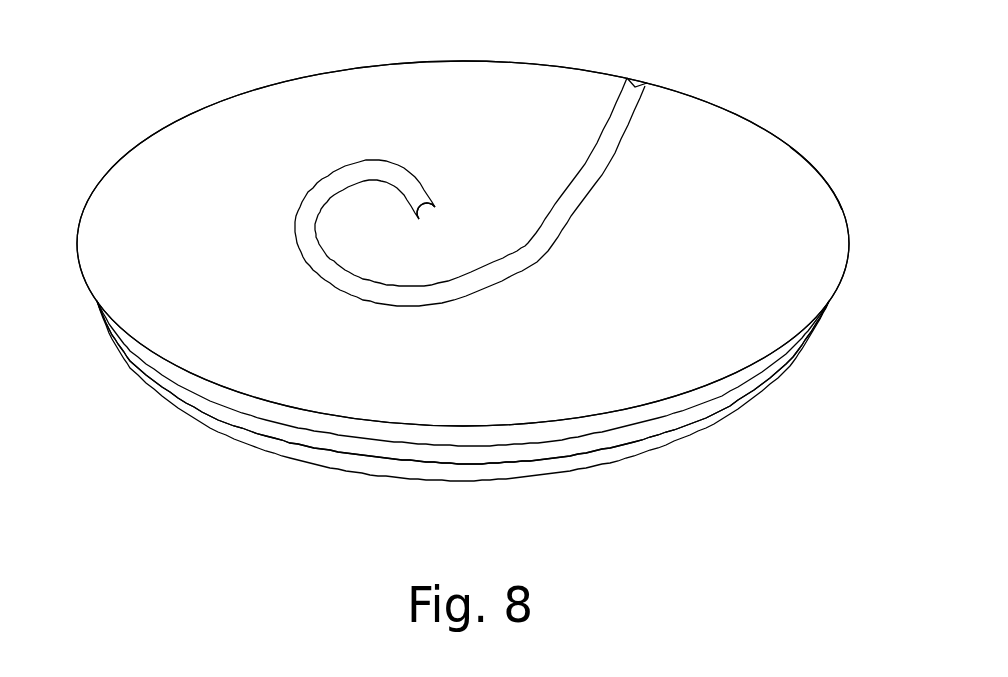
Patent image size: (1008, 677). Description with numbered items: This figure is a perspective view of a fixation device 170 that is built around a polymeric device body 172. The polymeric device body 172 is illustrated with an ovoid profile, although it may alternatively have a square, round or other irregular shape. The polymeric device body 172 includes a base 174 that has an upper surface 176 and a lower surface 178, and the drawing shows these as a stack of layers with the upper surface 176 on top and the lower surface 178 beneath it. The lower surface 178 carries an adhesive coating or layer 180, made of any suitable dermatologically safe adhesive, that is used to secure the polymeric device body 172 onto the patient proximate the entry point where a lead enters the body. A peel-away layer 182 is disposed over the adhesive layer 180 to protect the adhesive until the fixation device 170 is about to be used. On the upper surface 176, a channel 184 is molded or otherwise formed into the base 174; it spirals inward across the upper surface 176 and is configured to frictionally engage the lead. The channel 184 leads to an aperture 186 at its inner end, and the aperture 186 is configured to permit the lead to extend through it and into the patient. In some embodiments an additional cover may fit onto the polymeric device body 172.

The fixation device 170 is at (117, 99).
The polymeric device body 172 is at (810, 98).
The base 174 is at (832, 193).
The upper surface 176 is at (719, 251).
The lower surface 178 is at (188, 458).
The adhesive layer 180 is at (477, 459).
The peel-away layer 182 is at (565, 469).
The channel 184 is at (473, 288).
The aperture 186 is at (438, 207).